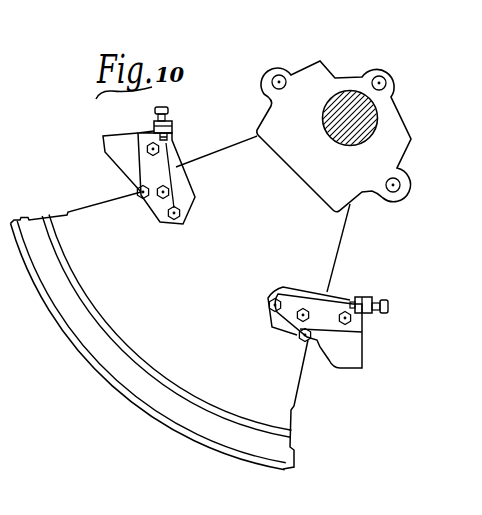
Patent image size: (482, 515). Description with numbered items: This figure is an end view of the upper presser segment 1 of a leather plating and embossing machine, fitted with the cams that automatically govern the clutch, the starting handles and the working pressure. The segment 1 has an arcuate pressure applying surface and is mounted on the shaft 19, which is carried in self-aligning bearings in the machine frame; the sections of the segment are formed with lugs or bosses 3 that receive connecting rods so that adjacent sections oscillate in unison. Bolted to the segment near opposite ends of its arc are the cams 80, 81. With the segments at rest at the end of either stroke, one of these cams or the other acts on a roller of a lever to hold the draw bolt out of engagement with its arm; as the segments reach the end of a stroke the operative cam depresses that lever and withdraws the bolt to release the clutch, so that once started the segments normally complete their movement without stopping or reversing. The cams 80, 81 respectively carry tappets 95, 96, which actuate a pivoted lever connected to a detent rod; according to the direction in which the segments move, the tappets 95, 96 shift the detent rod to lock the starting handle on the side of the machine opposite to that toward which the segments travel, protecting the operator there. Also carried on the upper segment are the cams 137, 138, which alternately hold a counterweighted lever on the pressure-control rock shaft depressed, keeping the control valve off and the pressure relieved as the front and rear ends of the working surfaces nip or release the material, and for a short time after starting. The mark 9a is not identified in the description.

The upper presser segment 1 is at (270, 399).
The lugs or bosses 3 is at (282, 71).
The rim flange 9a is at (12, 442).
The shaft 19 is at (328, 123).
The cam 80 is at (157, 212).
The cam 81 is at (280, 318).
The tappet 95 is at (175, 127).
The tappet 96 is at (365, 297).
The cam 137 is at (148, 168).
The cam 138 is at (318, 312).